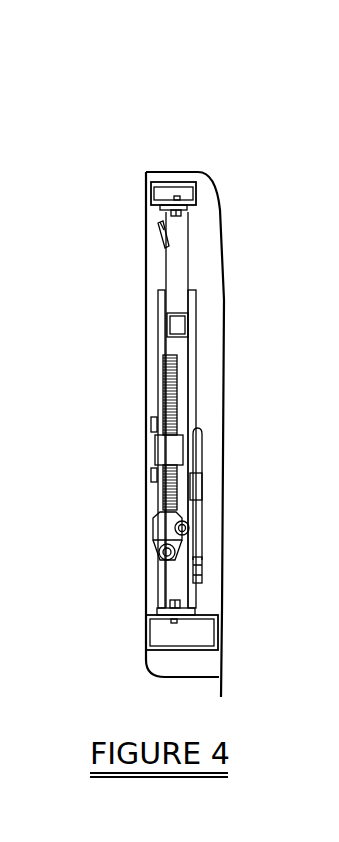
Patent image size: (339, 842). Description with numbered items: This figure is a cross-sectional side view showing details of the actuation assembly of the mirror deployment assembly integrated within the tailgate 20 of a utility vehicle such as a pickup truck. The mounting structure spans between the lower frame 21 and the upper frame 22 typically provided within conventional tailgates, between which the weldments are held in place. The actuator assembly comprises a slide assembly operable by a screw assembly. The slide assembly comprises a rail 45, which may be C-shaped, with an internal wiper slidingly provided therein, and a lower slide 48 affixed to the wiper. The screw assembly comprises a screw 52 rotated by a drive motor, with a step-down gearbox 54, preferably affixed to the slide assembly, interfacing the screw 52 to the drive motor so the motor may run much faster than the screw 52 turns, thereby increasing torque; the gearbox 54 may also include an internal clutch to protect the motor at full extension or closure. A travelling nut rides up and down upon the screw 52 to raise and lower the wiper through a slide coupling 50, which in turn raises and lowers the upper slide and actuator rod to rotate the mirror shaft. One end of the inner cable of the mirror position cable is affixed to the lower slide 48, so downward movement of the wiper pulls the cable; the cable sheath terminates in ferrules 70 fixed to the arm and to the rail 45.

The tailgate 20 is at (195, 160).
The lower frame 21 is at (219, 648).
The upper frame 22 is at (151, 193).
The rail 45 is at (200, 370).
The lower slide 48 is at (212, 577).
The slide coupling 50 is at (160, 452).
The screw 52 is at (157, 500).
The step-down gearbox 54 is at (155, 528).
The ferrules 70 is at (198, 492).